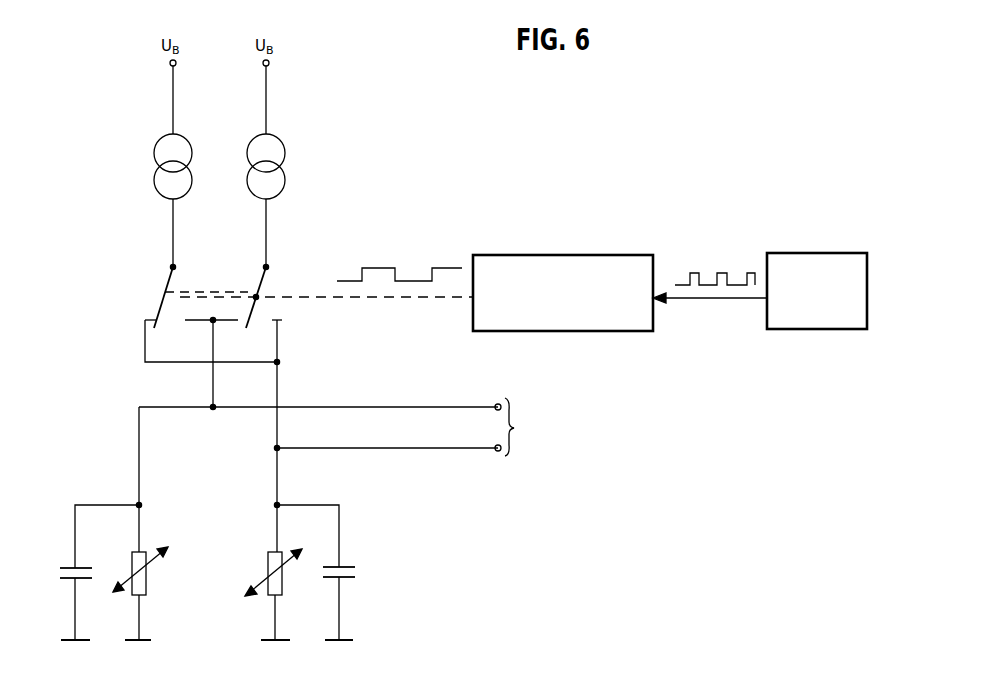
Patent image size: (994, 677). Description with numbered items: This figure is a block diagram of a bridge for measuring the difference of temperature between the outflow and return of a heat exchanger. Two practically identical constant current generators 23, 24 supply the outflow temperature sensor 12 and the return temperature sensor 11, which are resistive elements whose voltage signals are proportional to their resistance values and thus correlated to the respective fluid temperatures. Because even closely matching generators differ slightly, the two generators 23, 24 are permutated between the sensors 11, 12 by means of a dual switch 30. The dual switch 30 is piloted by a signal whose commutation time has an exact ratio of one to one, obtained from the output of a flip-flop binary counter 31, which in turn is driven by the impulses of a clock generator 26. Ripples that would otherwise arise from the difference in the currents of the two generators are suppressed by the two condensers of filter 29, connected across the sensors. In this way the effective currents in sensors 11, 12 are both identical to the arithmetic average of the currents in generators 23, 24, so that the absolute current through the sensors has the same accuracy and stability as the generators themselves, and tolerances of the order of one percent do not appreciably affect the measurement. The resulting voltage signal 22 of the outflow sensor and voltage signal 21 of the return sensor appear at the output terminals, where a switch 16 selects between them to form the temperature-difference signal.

The constant current source 23 is at (154, 156).
The constant current source 24 is at (285, 158).
The dual switch 30 is at (285, 294).
The flip-flop binary counter 31 is at (555, 254).
The clock generator 26 is at (867, 298).
The voltage signal 22 is at (439, 405).
The voltage signal 21 is at (421, 451).
The switch 16 is at (540, 427).
The filter 29 is at (66, 568).
The outflow temperature sensor 12 is at (146, 587).
The return temperature sensor 11 is at (282, 586).